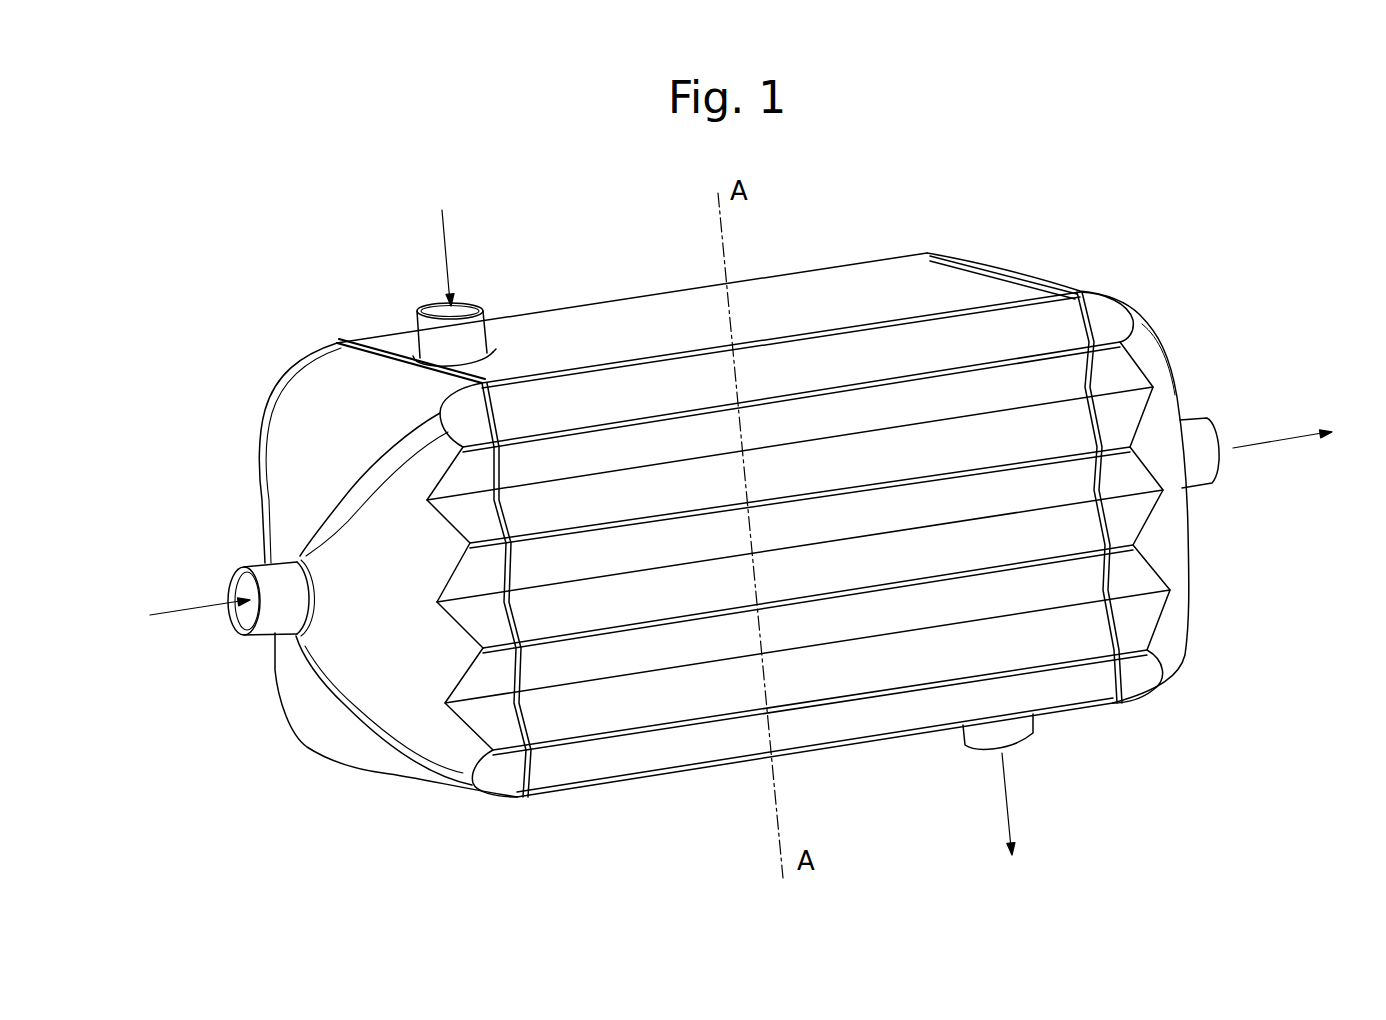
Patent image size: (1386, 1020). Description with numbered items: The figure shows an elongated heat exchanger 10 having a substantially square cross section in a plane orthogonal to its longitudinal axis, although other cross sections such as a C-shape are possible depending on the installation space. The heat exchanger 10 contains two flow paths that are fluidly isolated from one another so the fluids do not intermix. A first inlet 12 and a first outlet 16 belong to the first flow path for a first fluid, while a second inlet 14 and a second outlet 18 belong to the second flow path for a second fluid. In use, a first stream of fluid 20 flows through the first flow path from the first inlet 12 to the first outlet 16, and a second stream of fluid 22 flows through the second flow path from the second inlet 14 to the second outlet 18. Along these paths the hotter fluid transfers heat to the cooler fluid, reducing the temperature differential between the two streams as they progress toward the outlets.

The heat exchanger 10 is at (940, 193).
The first inlet 12 is at (430, 310).
The second inlet 14 is at (247, 633).
The first outlet 16 is at (1028, 733).
The second outlet 18 is at (1195, 430).
The first stream of fluid 20 is at (445, 230).
The second stream of fluid 22 is at (192, 608).